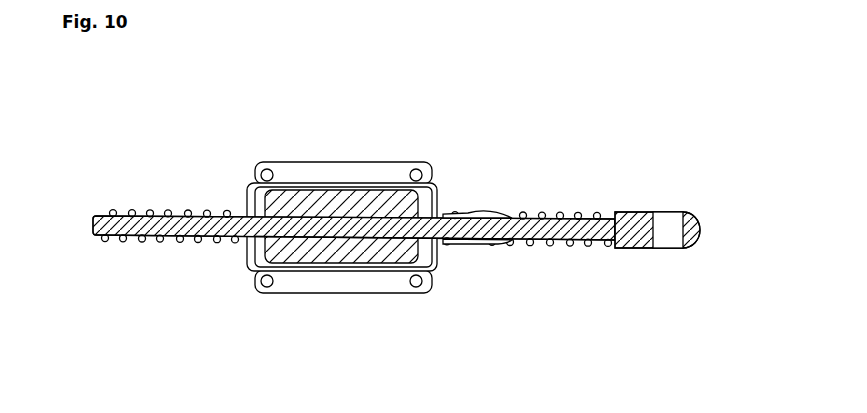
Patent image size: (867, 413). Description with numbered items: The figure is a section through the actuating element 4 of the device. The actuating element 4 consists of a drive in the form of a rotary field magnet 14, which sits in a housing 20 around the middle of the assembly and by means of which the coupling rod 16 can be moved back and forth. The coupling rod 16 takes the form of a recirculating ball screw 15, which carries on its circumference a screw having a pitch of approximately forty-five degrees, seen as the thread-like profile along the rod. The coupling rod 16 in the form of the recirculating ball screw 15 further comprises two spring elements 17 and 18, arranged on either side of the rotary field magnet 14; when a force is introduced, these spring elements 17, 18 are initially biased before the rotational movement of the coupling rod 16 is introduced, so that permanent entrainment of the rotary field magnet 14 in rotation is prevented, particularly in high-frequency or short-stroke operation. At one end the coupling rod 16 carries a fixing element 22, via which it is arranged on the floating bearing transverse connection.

The actuating element 4 is at (410, 118).
The rotary field magnet 14 is at (341, 226).
The recirculating ball screw 15 is at (473, 241).
The coupling rod 16 is at (477, 241).
The spring element 17 is at (557, 217).
The spring element 18 is at (130, 213).
The housing 20 is at (313, 282).
The fixing element 22 is at (698, 213).